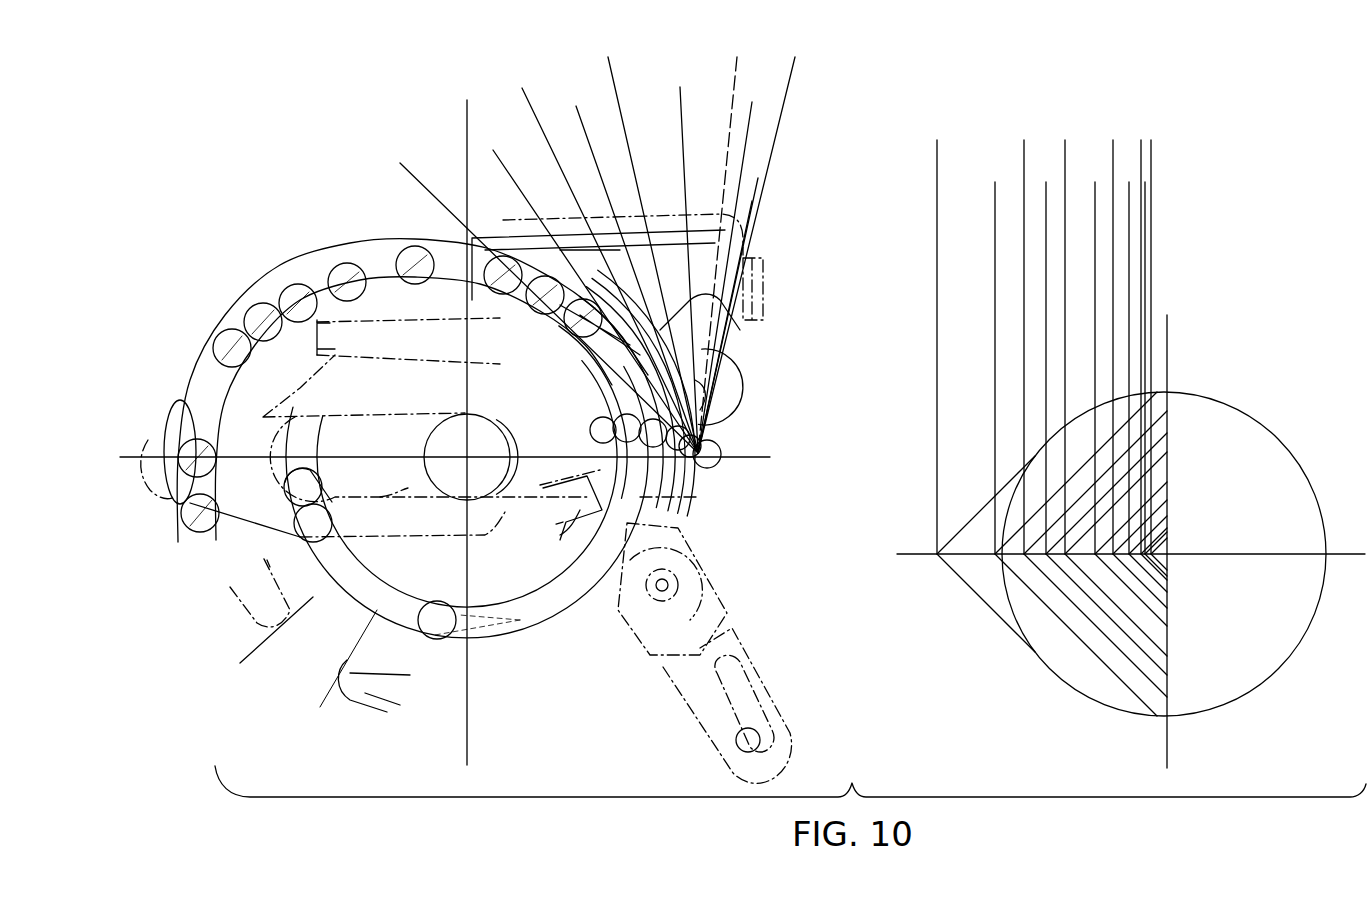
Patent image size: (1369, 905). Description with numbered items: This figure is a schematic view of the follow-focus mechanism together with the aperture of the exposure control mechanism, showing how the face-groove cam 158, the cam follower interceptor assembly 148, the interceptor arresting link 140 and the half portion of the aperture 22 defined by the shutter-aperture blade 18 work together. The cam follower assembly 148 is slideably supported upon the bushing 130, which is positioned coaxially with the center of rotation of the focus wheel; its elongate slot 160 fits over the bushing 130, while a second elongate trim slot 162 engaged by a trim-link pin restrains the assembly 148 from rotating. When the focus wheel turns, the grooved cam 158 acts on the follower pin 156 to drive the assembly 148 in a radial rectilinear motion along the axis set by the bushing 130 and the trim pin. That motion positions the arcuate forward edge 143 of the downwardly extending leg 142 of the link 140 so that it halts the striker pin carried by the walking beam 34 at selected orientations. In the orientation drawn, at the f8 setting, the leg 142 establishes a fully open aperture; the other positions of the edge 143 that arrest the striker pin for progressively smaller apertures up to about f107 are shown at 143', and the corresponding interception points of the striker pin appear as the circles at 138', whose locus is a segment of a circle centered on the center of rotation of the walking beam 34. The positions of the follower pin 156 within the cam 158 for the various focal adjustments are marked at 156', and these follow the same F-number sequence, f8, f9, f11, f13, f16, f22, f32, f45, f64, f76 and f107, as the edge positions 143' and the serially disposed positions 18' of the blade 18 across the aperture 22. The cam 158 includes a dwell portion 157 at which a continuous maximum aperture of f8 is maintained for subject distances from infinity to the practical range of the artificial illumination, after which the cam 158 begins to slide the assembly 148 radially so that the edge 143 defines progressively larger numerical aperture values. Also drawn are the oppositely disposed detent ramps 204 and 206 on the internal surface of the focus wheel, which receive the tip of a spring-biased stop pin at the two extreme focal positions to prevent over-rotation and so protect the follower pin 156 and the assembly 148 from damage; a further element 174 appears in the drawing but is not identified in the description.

The F/8 aperture position f8 is at (125, 422).
The F/9 aperture position f9 is at (190, 312).
The F/11 aperture position f11 is at (275, 298).
The F/13 aperture position f13 is at (811, 317).
The F/16 aperture position f16 is at (838, 293).
The F/22 aperture position f22 is at (888, 308).
The F/32 aperture position f32 is at (912, 293).
The F/45 aperture position f45 is at (921, 316).
The F/64 aperture position f64 is at (927, 293).
The F/76 aperture position f76 is at (758, 178).
The F/107 aperture position f107 is at (752, 201).
The bushing 130 is at (425, 448).
The striker pin interception positions 138' is at (684, 393).
The interceptor arresting link 140 is at (628, 222).
The leg portion 142 is at (562, 535).
The arcuate forward edge 143 is at (553, 505).
The forward edge positions 143' is at (706, 496).
The cam follower interceptor assembly 148 is at (735, 362).
The follower pin 156 is at (393, 390).
The follower pin positions 156' is at (371, 379).
The dwell portion 157 is at (150, 463).
The face-groove cam 158 is at (520, 620).
The elongate slot 160 is at (408, 494).
The trim slot 162 is at (745, 390).
The plate 174 is at (302, 364).
The detent ramp 204 is at (370, 666).
The detent ramp 206 is at (259, 610).
The walking beam 34 is at (738, 662).
The aperture 22 is at (1268, 512).
The shutter-aperture blade 18 is at (986, 554).
The blade positions 18' is at (1106, 560).